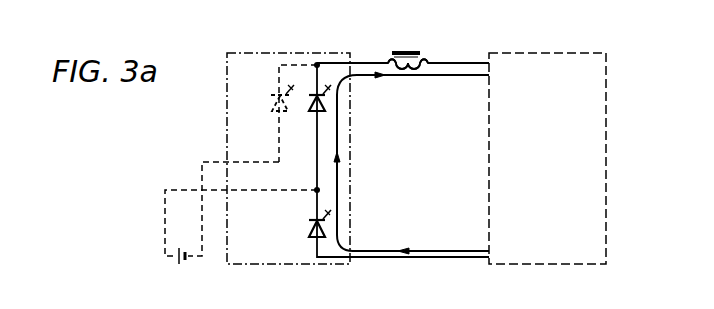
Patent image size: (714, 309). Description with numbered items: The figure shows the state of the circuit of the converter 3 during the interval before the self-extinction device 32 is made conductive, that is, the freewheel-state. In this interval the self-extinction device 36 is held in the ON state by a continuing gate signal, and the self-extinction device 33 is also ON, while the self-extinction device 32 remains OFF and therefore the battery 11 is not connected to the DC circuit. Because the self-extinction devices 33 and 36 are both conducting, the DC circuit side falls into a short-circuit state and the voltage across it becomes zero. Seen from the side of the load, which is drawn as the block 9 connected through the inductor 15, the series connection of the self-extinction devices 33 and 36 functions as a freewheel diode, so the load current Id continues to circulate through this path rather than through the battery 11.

The converter 3 is at (282, 52).
The load circuit 9 is at (556, 52).
The battery 11 is at (181, 265).
The inductor (smoothing choke) 15 is at (410, 52).
The self-extinction device 32 is at (274, 96).
The self-extinction device 33 is at (309, 104).
The self-extinction device 36 is at (308, 231).
The direct current Id is at (445, 78).